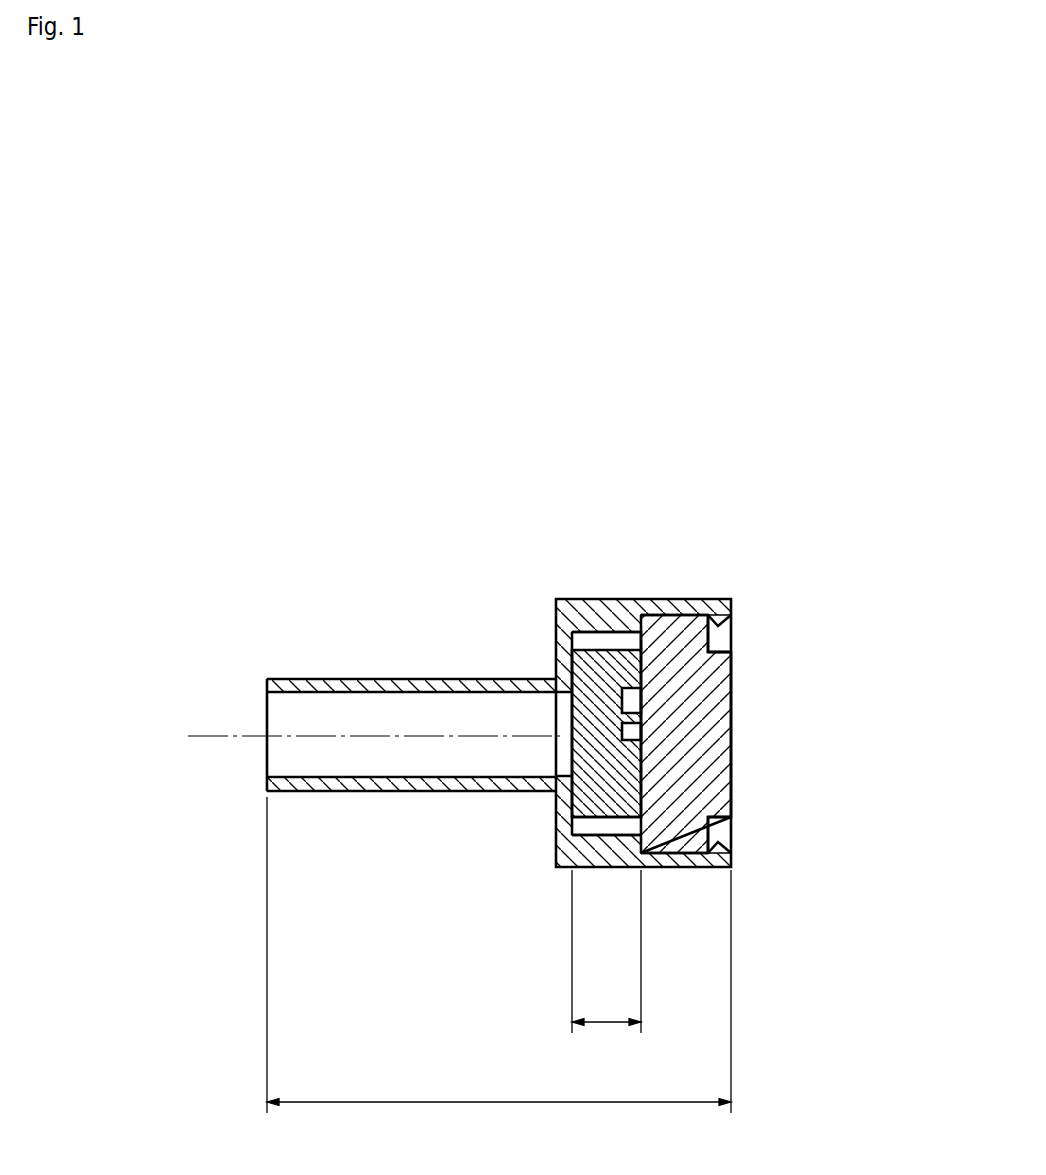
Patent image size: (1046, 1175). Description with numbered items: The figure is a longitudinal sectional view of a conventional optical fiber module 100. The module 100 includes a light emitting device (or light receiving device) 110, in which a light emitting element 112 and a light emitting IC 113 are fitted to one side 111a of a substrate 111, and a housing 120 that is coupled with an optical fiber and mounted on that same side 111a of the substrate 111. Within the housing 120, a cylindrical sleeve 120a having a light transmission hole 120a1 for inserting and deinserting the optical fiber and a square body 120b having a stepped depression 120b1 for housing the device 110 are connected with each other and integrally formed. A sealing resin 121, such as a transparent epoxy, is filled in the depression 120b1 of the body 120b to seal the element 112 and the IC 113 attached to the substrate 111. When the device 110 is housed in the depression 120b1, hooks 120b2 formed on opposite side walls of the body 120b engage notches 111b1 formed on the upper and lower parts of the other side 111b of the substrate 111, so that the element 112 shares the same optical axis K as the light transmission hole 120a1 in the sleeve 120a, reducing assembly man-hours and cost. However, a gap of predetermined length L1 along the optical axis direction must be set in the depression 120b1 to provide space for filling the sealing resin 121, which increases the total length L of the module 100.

The optical fiber module 100 is at (268, 447).
The light emitting device 110 is at (732, 715).
The substrate 111 is at (712, 742).
The one side of the substrate 111a is at (618, 633).
The other side of the substrate 111b is at (732, 663).
The notches 111b1 is at (722, 640).
The light emitting element 112 is at (623, 732).
The light emitting IC 113 is at (623, 705).
The housing 120 is at (501, 509).
The cylindrical sleeve 120a is at (373, 678).
The light transmission hole 120a1 is at (320, 778).
The square body 120b is at (556, 601).
The stepped depression 120b1 is at (592, 821).
The hooks 120b2 is at (722, 600).
The sealing resin 121 is at (590, 665).
The optical axis K is at (212, 735).
The total length L is at (499, 955).
The predetermined length of gap L1 is at (606, 951).